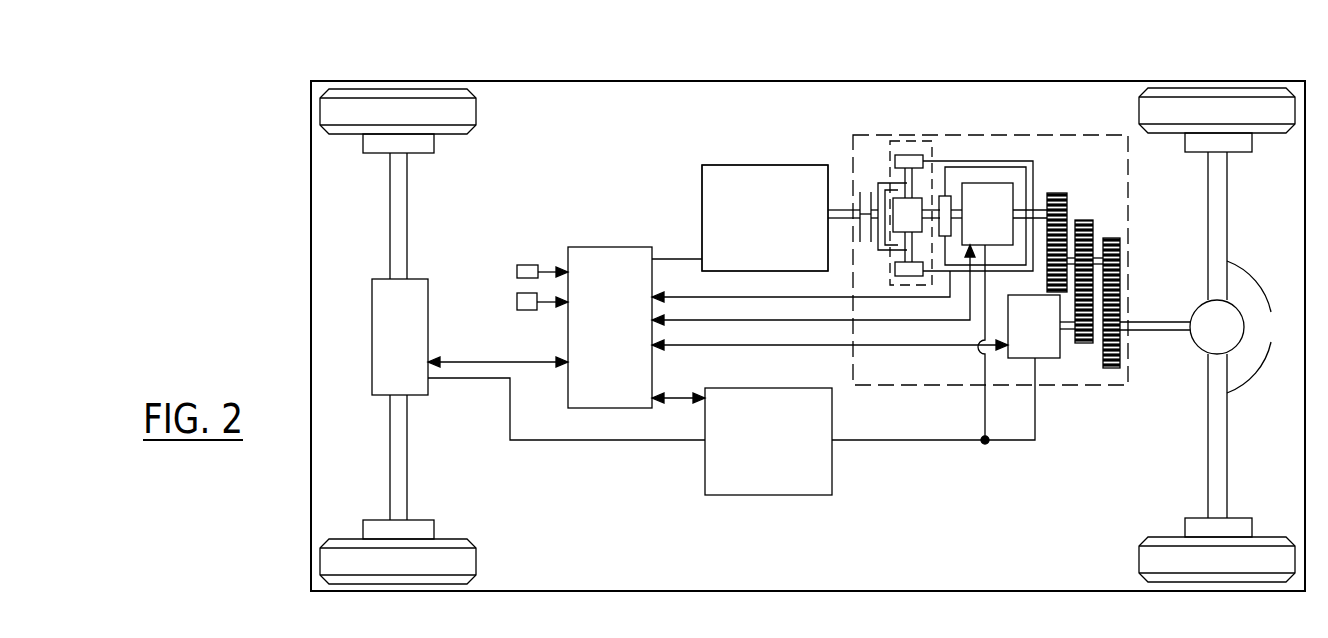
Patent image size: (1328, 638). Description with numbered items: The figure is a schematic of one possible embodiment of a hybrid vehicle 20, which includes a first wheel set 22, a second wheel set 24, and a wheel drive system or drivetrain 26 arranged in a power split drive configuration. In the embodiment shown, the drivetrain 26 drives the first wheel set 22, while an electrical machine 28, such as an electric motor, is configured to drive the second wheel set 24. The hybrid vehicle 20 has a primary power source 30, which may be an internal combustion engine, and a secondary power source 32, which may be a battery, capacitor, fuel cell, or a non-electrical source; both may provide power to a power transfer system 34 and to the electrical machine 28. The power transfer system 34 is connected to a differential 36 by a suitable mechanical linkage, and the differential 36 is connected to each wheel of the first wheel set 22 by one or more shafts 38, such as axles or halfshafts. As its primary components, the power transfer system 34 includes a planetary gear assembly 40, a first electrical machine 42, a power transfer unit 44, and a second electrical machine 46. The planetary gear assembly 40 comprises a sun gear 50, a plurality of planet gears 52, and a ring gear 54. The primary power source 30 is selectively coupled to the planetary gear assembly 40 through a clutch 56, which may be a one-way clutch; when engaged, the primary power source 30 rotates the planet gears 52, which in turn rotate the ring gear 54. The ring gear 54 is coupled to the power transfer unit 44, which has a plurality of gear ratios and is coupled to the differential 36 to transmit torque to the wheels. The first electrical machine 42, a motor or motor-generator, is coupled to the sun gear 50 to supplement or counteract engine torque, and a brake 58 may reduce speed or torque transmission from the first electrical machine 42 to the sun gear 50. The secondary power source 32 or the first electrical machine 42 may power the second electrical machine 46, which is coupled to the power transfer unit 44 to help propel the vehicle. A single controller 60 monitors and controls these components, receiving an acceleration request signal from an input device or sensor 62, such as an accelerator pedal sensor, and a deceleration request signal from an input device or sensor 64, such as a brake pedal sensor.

The hybrid vehicle 20 is at (557, 68).
The first wheel set 22 is at (1222, 76).
The second wheel set 24 is at (404, 76).
The drivetrain 26 is at (690, 199).
The electrical machine 28 is at (389, 349).
The primary power source 30 is at (728, 165).
The secondary power source 32 is at (747, 495).
The power transfer system 34 is at (852, 135).
The differential 36 is at (1206, 339).
The shaft 38 is at (1255, 327).
The planetary gear assembly 40 is at (925, 147).
The first electrical machine 42 is at (976, 226).
The power transfer unit 44 is at (1090, 208).
The second electrical machine 46 is at (1023, 337).
The sun gear 50 is at (897, 226).
The planet gears 52 is at (895, 168).
The ring gear 54 is at (906, 155).
The clutch 56 is at (855, 197).
The brake 58 is at (945, 197).
The controller 60 is at (599, 334).
The input device or sensor 62 is at (527, 265).
The input device or sensor 64 is at (527, 310).